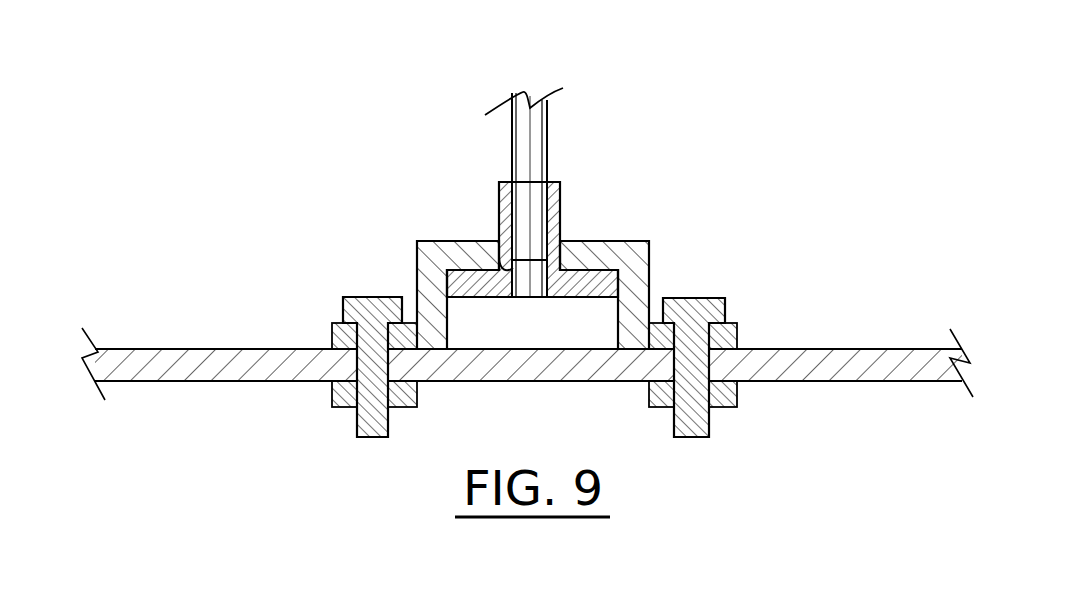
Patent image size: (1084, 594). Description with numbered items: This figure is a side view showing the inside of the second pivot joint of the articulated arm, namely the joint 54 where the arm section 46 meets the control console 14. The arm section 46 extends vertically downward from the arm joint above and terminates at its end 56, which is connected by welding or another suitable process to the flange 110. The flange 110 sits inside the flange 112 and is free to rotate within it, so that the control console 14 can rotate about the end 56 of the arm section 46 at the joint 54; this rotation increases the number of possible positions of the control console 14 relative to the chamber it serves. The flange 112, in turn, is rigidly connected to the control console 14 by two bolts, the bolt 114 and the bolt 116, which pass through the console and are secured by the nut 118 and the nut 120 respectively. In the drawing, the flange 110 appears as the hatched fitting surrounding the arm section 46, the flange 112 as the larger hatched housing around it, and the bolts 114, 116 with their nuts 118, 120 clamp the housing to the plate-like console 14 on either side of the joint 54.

The control console 14 is at (224, 345).
The arm section 46 is at (549, 123).
The joint 54 is at (590, 261).
The end of arm section 56 is at (500, 262).
The flange 110 is at (561, 198).
The flange 112 is at (634, 241).
The bolt 114 is at (727, 305).
The bolt 116 is at (363, 296).
The nut 118 is at (738, 398).
The nut 120 is at (418, 393).